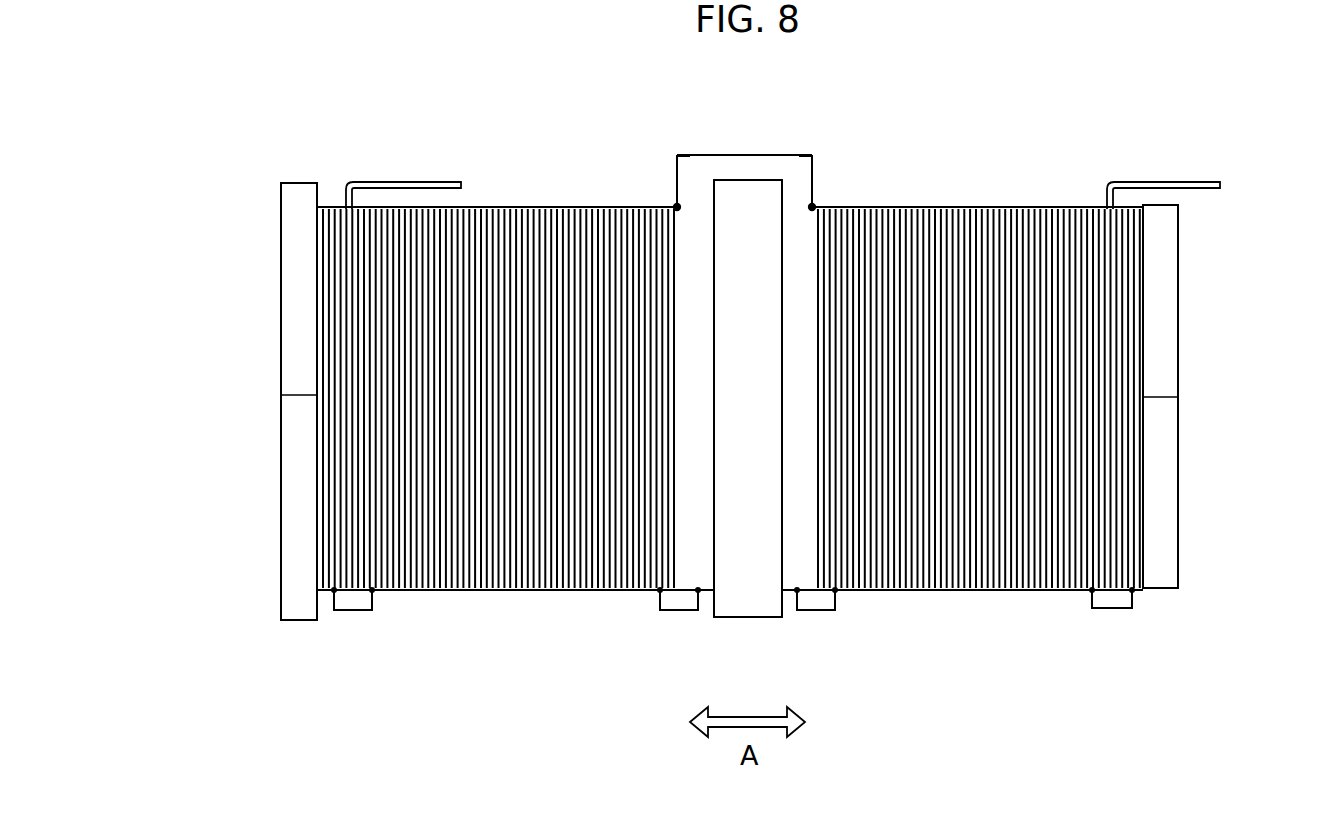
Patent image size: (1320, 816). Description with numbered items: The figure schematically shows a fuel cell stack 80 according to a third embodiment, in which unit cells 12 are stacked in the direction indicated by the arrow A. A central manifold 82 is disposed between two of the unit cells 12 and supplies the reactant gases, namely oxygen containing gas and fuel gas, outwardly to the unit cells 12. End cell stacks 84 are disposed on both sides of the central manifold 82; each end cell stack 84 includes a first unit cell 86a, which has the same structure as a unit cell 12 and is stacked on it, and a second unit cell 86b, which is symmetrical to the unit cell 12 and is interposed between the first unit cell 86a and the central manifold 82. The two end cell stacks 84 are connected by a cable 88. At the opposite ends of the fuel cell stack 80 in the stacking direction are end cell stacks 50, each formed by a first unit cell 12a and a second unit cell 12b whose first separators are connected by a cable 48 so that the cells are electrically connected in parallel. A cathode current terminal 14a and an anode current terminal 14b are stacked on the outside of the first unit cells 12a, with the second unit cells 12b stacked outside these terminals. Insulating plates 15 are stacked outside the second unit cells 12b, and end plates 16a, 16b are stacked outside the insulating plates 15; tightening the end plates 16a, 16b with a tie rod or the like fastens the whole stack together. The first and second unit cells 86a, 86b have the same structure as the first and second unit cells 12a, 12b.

The fuel cell stack 80 is at (549, 54).
The unit cells 12 is at (552, 182).
The first unit cells 12a is at (375, 203).
The second unit cells 12b is at (332, 188).
The cathode current terminal 14a is at (440, 181).
The anode current terminal 14b is at (1218, 181).
The insulating plates 15 is at (318, 393).
The end plate 16a is at (262, 300).
The end plate 16b is at (1182, 285).
The cable 48 is at (352, 612).
The end cell stack 50 is at (346, 126).
The central manifold 82 is at (749, 618).
The end cell stacks 84 is at (679, 128).
The first unit cell 86a is at (654, 198).
The second unit cell 86b is at (692, 198).
The cable 88 is at (746, 152).